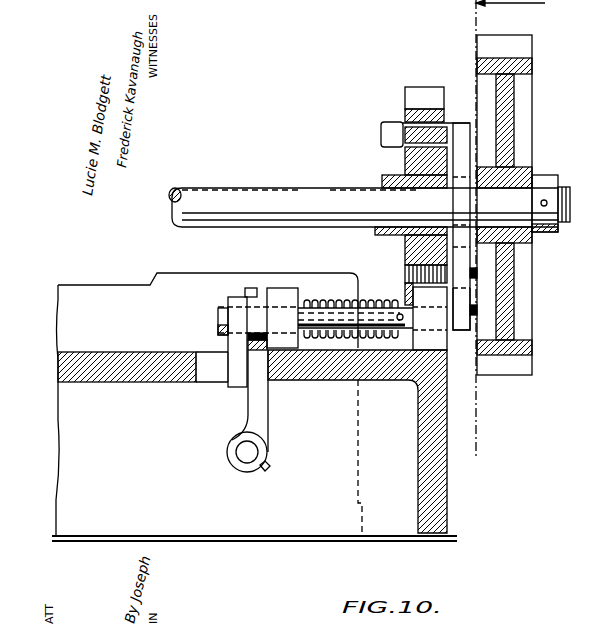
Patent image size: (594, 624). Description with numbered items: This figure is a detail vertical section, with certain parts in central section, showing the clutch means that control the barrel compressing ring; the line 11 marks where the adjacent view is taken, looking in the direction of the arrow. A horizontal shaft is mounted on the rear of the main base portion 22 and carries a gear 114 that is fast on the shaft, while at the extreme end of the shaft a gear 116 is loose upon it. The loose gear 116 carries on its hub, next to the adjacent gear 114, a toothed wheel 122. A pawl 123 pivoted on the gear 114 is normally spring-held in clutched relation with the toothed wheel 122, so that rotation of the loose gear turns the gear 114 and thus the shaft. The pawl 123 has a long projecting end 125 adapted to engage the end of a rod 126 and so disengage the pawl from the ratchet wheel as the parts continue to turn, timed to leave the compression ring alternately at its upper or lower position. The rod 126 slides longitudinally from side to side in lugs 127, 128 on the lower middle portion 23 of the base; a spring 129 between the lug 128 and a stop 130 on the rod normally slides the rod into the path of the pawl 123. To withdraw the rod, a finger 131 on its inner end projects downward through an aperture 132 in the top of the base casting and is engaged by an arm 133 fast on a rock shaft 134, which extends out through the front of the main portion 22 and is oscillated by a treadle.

The section line 11 is at (510, 238).
The main base portion 22 is at (122, 283).
The lower middle portion 23 is at (140, 383).
The gear 114 is at (422, 98).
The gear 116 is at (534, 109).
The toothed wheel 122 is at (474, 121).
The pawl 123 is at (462, 148).
The projecting end 125 is at (463, 331).
The rod 126 is at (222, 324).
The lug 127 is at (435, 300).
The lug 128 is at (278, 295).
The spring 129 is at (347, 336).
The stop 130 is at (401, 321).
The finger 131 is at (237, 368).
The aperture 132 is at (213, 358).
The arm 133 is at (262, 402).
The rock shaft 134 is at (240, 452).